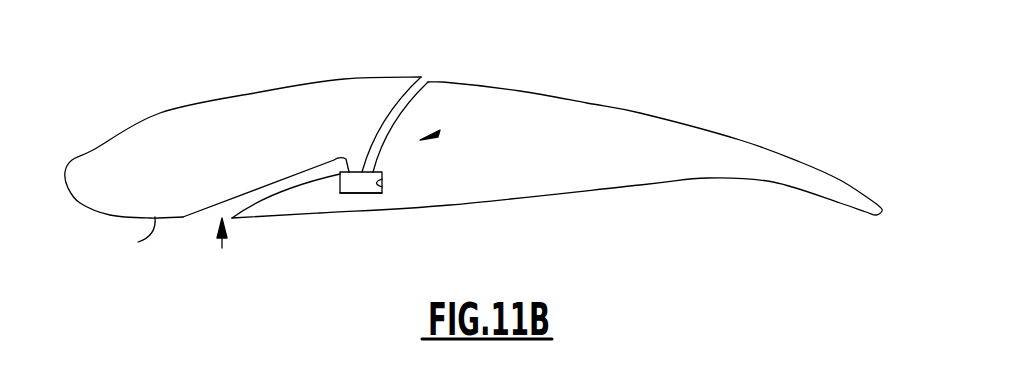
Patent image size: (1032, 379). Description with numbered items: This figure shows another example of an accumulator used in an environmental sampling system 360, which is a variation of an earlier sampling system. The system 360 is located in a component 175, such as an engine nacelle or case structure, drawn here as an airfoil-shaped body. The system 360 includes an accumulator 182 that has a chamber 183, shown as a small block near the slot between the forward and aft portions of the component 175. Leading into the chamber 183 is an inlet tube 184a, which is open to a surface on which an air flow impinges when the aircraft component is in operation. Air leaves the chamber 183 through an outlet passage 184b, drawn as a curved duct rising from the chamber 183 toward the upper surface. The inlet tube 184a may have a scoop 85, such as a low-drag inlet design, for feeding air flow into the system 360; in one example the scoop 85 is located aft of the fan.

The component 175 is at (587, 103).
The inlet tube 184a is at (231, 197).
The outlet passage 184b is at (390, 114).
The chamber 183 is at (382, 183).
The accumulator 182 is at (367, 193).
The environmental sampling system 360 is at (439, 134).
The scoop 85 is at (222, 248).